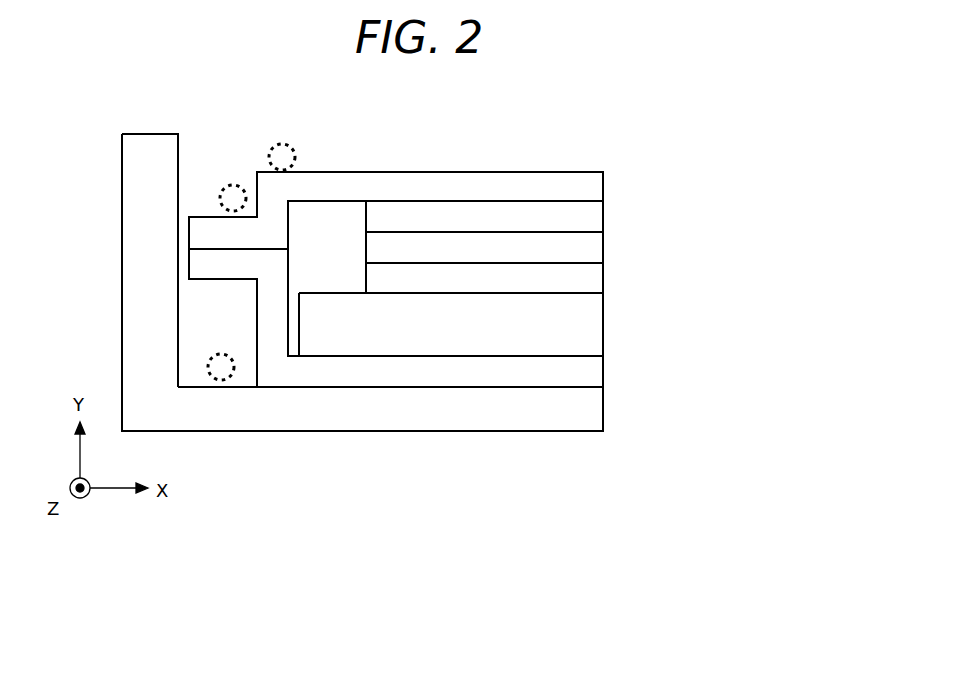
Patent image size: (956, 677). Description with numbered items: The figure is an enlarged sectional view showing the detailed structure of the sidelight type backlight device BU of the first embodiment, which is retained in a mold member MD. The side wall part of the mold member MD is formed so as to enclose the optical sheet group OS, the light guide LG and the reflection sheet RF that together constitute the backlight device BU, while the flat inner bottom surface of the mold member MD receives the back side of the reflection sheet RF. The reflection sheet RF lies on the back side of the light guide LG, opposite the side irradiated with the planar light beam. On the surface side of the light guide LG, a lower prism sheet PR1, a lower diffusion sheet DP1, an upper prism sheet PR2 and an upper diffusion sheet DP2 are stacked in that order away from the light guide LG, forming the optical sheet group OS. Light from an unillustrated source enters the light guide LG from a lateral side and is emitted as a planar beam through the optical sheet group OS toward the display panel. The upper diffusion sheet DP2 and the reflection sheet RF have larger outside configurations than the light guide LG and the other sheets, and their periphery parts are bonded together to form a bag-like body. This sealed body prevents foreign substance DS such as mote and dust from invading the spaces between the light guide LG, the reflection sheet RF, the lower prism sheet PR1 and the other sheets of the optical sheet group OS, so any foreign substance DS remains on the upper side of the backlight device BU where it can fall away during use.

The foreign substance DS is at (272, 160).
The upper diffusion sheet DP2 is at (585, 188).
The upper prism sheet PR2 is at (585, 217).
The lower diffusion sheet DP1 is at (582, 248).
The lower prism sheet PR1 is at (578, 278).
The light guide LG is at (585, 327).
The reflection sheet RF is at (585, 371).
The mold member MD is at (587, 409).
The optical sheet group OS is at (727, 173).
The backlight device BU is at (783, 173).